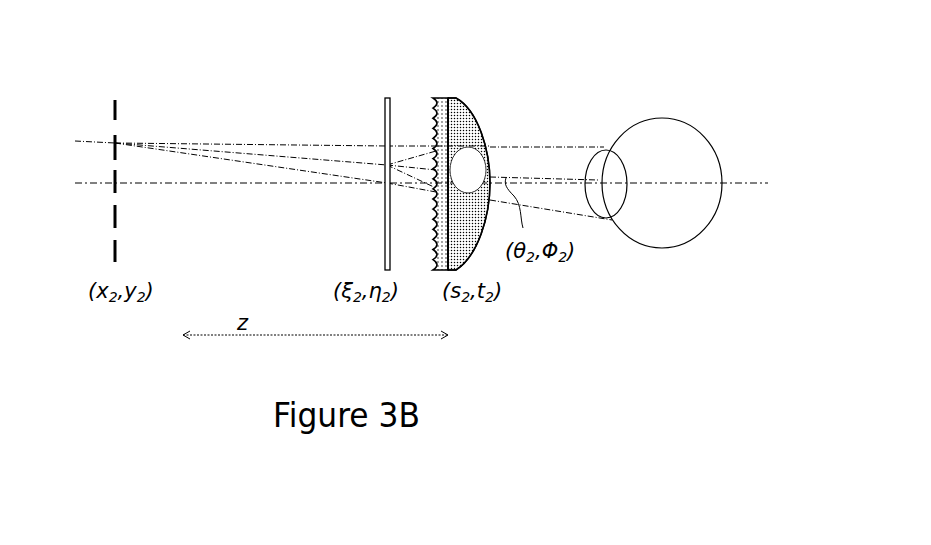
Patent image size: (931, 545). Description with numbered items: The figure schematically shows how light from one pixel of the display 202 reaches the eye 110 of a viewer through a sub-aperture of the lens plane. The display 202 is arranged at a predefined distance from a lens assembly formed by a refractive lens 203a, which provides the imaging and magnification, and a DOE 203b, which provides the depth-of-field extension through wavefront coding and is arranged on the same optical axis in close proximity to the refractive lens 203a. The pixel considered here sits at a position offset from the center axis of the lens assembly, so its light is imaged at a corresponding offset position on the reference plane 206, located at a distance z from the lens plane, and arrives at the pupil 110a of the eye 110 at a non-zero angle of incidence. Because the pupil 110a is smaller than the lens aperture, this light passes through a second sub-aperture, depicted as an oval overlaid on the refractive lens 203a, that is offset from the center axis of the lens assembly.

The reference plane 206 is at (112, 100).
The 2D display 202 is at (383, 110).
The DOE 203b is at (436, 97).
The refractive lens 203a is at (460, 110).
The pupil 110a is at (595, 147).
The eye 110 is at (692, 138).